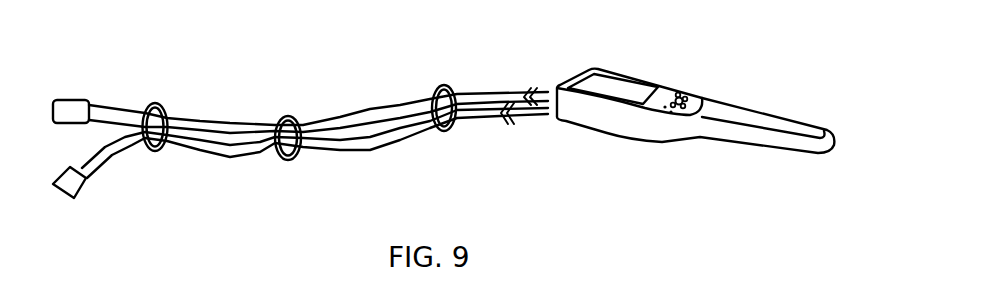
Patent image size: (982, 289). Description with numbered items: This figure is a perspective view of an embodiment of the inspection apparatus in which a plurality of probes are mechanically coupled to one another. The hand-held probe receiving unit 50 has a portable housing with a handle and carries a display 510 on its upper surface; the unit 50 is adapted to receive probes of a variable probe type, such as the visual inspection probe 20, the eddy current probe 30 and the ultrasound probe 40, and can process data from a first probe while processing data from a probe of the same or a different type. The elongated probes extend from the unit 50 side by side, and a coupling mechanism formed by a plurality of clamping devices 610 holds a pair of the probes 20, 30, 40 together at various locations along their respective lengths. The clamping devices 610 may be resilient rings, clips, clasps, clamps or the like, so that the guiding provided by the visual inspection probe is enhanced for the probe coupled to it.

The visual inspection probe 20 is at (358, 112).
The eddy current probe 30 is at (346, 149).
The ultrasound probe 40 is at (300, 161).
The probe receiving unit 50 is at (618, 134).
The display 510 is at (626, 88).
The clamping devices 610 is at (155, 102).